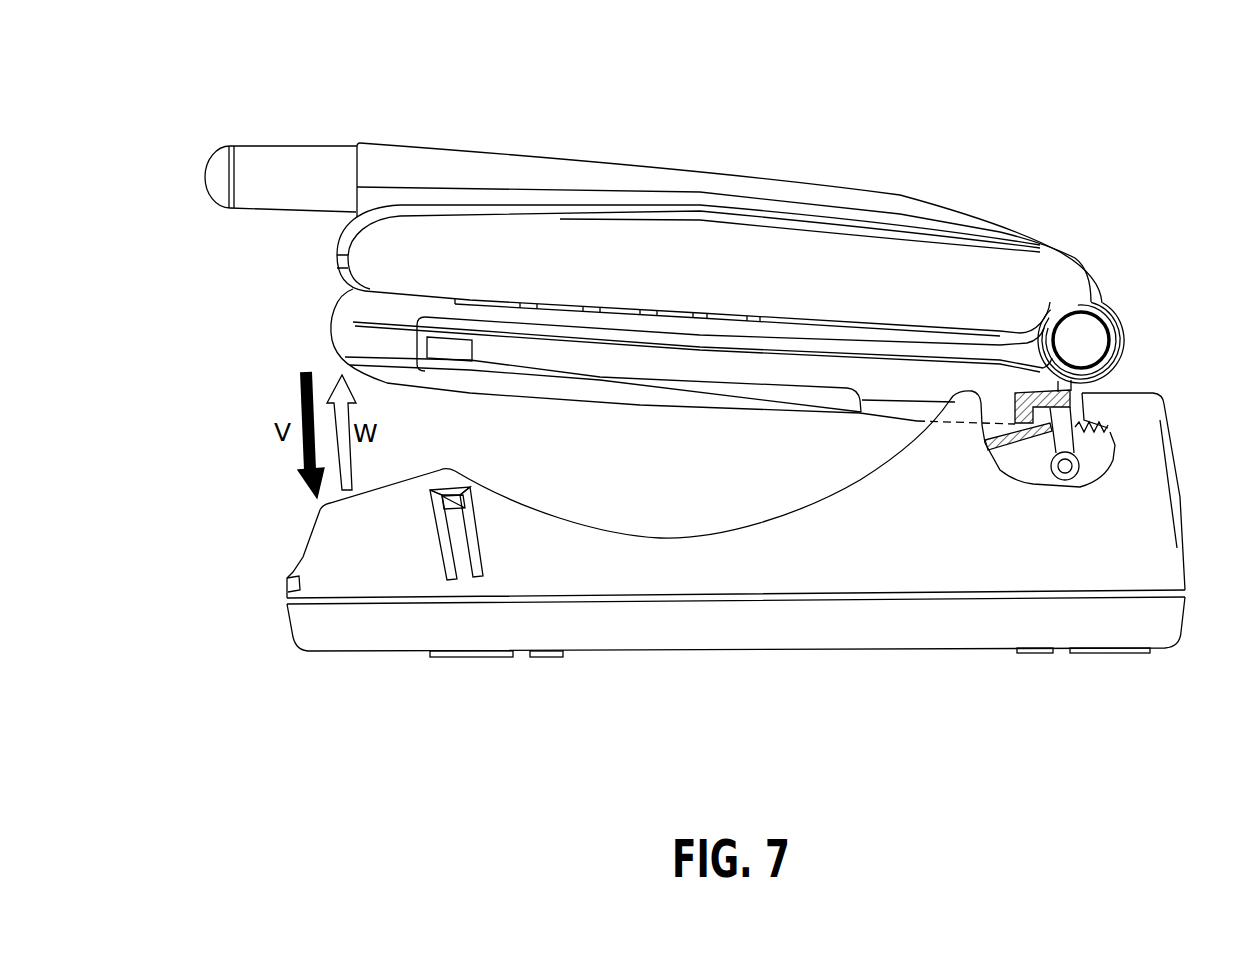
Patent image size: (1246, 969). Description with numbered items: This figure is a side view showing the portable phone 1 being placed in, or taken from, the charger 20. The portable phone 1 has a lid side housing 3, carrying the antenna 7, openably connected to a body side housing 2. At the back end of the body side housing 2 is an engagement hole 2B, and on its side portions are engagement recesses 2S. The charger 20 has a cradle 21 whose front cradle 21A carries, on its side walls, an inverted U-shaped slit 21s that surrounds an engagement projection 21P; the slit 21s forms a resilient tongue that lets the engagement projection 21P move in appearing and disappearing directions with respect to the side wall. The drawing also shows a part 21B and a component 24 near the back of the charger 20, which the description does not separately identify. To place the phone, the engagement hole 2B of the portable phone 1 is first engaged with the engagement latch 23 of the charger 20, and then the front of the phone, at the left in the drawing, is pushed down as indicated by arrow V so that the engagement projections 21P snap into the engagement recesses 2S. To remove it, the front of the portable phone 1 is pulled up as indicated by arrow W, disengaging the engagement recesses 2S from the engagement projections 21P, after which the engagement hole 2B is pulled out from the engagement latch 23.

The portable phone 1 is at (756, 160).
The body side housing 2 is at (693, 418).
The engagement hole 2B is at (1047, 402).
The engagement recesses 2S is at (457, 350).
The lid side housing 3 is at (600, 152).
The antenna 7 is at (301, 163).
The charger 20 is at (252, 585).
The cradle body 21 is at (884, 560).
The front cradle 21A is at (352, 526).
The engaging recess 21B is at (948, 437).
The engagement projection 21P is at (457, 495).
The inverted U-shaped slit 21s is at (447, 540).
The engagement latch 23 is at (1070, 443).
The spring 24 is at (1107, 427).